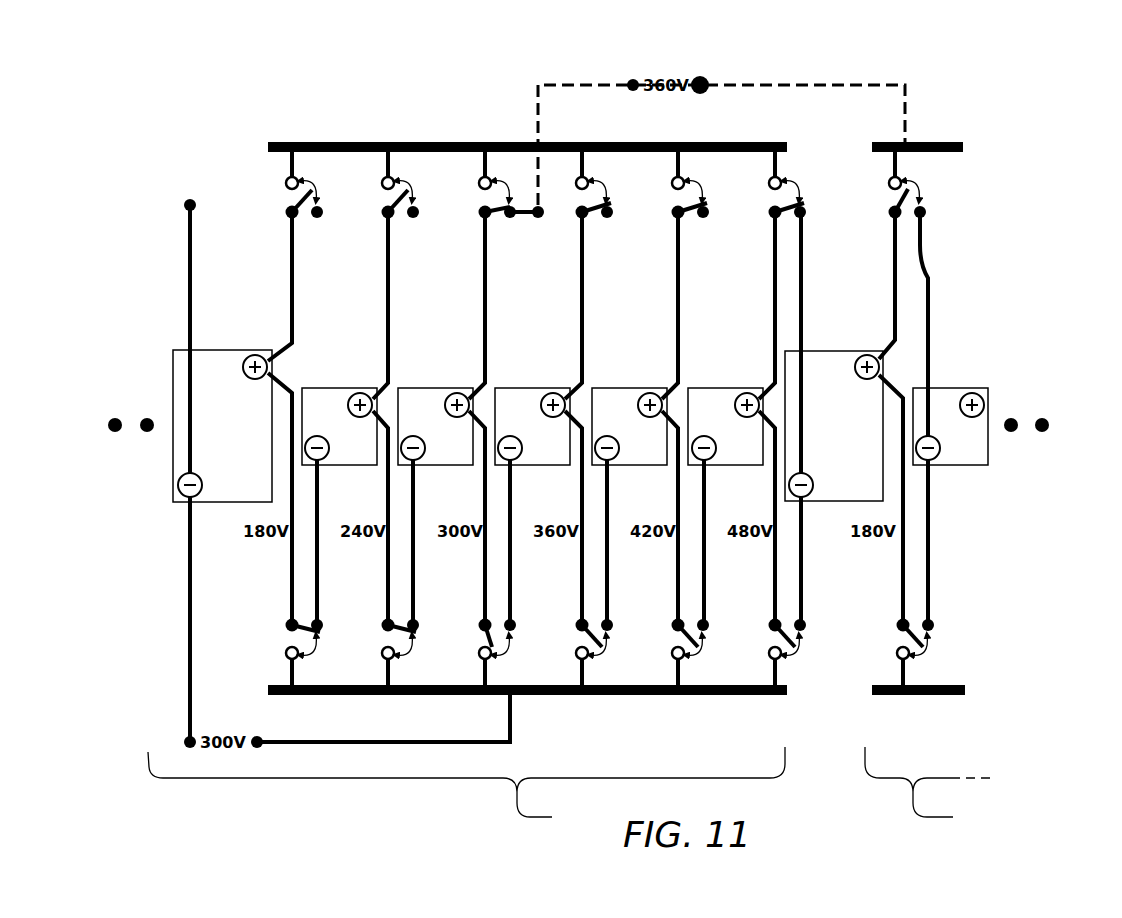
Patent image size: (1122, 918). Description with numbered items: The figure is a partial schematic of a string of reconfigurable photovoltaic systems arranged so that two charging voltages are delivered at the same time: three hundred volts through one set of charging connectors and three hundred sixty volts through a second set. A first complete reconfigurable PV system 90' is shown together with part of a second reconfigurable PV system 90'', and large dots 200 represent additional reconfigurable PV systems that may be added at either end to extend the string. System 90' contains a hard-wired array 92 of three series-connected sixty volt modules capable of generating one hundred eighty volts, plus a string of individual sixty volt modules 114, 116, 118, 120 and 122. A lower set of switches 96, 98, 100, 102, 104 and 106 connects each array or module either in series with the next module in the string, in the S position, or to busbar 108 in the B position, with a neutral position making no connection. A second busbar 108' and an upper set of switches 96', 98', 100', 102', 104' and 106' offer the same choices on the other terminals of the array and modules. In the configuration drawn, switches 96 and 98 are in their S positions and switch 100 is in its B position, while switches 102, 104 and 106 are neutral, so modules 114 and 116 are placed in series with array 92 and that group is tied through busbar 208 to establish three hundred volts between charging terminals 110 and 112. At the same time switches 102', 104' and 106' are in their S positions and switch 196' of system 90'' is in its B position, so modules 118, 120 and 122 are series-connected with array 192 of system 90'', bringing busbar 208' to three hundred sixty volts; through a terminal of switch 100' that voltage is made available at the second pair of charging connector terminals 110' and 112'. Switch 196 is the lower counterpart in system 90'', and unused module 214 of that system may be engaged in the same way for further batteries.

The first complete reconfigurable PV system 90' is at (466, 791).
The second reconfigurable PV system 90'' is at (931, 791).
The hard-wired array 92 is at (220, 350).
The switch 96 is at (289, 613).
The switch 98 is at (385, 613).
The switch 100 is at (476, 613).
The switch 102 is at (572, 613).
The switch 104 is at (669, 613).
The switch 106 is at (764, 613).
The switch 96' is at (278, 217).
The switch 98' is at (384, 223).
The switch 100' is at (473, 222).
The switch 102' is at (571, 222).
The switch 104' is at (666, 223).
The switch 106' is at (761, 223).
The busbar 108 is at (527, 723).
The second busbar 108' is at (527, 114).
The charging terminal 110 is at (150, 760).
The charging connector terminal 110' is at (592, 65).
The charging terminal 112 is at (278, 788).
The charging connector terminal 112' is at (748, 66).
The 60 volt module 114 is at (347, 388).
The 60 volt module 116 is at (443, 388).
The 60 volt module 118 is at (540, 388).
The 60 volt module 120 is at (638, 388).
The 60 volt module 122 is at (733, 388).
The array 192 is at (828, 350).
The switch 196 is at (898, 613).
The switch 196' is at (881, 223).
The additional reconfigurable PV systems 200 is at (146, 418).
The busbar 208 is at (955, 710).
The busbar 208' is at (941, 114).
The module 214 is at (957, 388).